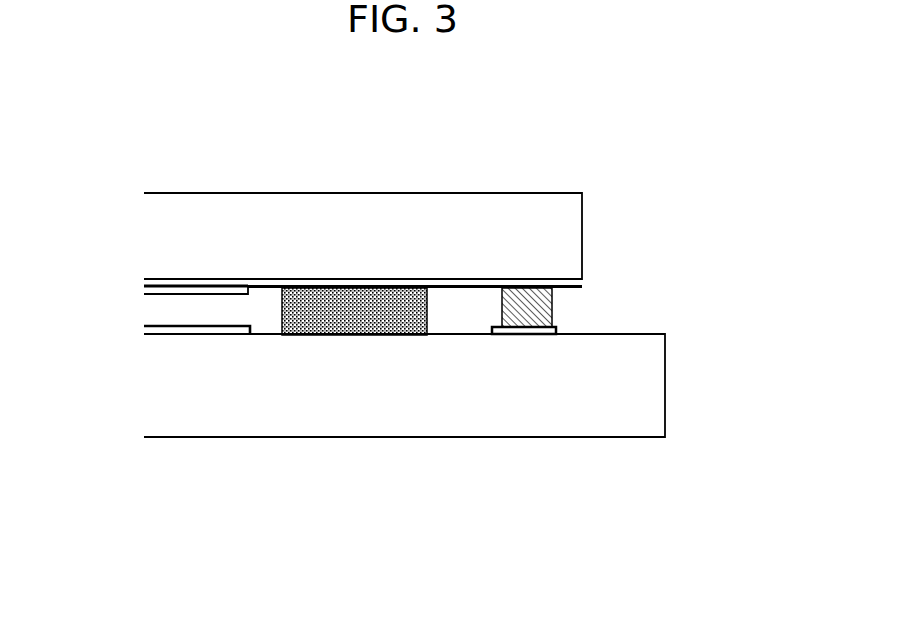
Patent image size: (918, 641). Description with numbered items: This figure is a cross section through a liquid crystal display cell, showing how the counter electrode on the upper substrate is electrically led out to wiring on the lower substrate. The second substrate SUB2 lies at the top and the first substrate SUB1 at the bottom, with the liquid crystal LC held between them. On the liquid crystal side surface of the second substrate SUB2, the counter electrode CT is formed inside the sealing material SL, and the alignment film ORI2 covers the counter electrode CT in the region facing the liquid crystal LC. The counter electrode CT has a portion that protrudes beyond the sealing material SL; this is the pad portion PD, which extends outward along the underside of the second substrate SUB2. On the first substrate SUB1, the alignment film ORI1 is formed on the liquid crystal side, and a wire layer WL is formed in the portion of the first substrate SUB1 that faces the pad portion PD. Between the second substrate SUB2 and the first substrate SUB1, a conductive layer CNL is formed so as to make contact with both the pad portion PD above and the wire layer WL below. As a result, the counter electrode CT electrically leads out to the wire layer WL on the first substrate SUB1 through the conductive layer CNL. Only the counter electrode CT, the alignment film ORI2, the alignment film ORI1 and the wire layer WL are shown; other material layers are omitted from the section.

The second substrate SUB2 is at (453, 205).
The first substrate SUB1 is at (388, 412).
The counter electrode CT is at (182, 283).
The pad portion PD is at (487, 283).
The alignment film ORI2 is at (230, 290).
The alignment film ORI1 is at (200, 330).
The liquid crystal LC is at (191, 311).
The sealing material SL is at (366, 312).
The conductive layer CNL is at (553, 308).
The wire layer WL is at (542, 334).